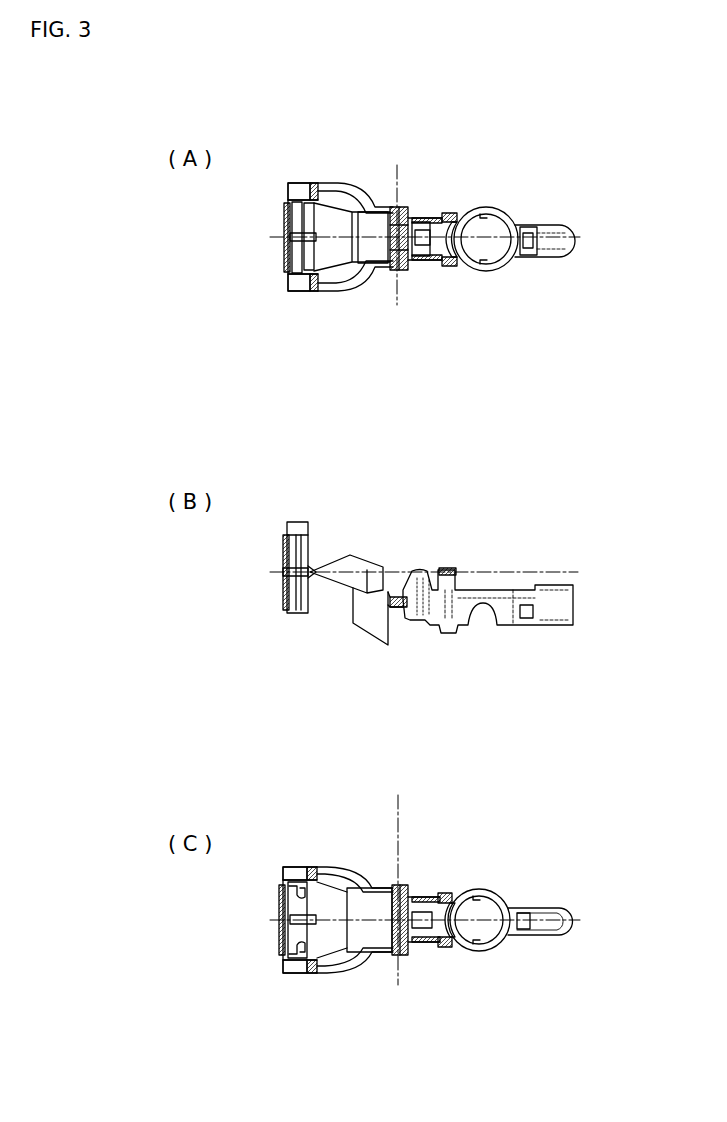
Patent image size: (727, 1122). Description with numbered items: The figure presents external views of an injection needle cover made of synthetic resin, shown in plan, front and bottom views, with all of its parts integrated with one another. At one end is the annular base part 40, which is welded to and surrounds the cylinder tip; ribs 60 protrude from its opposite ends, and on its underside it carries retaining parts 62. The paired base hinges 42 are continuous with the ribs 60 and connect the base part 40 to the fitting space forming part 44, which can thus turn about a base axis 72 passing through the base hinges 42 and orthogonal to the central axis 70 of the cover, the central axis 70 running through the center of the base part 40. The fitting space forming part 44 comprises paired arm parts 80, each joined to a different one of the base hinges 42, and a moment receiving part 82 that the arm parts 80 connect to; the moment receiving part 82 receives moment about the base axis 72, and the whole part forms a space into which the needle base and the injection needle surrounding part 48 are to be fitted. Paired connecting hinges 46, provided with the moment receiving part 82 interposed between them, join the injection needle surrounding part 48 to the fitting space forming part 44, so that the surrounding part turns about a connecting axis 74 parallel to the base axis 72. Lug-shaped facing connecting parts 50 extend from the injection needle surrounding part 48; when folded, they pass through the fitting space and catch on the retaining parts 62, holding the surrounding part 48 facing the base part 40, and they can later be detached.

The base part 40 is at (290, 293).
The base hinges 42 is at (316, 182).
The fitting space forming part 44 is at (374, 208).
The connecting hinges 46 is at (400, 205).
The injection needle surrounding part 48 is at (520, 265).
The facing connecting parts 50 is at (448, 212).
The ribs 60 is at (293, 185).
The retaining parts 62 is at (286, 890).
The central axis 70 is at (285, 238).
The base axis 72 is at (314, 185).
The connecting axis 74 is at (398, 168).
The arm parts 80 is at (348, 190).
The moment receiving part 82 is at (380, 645).